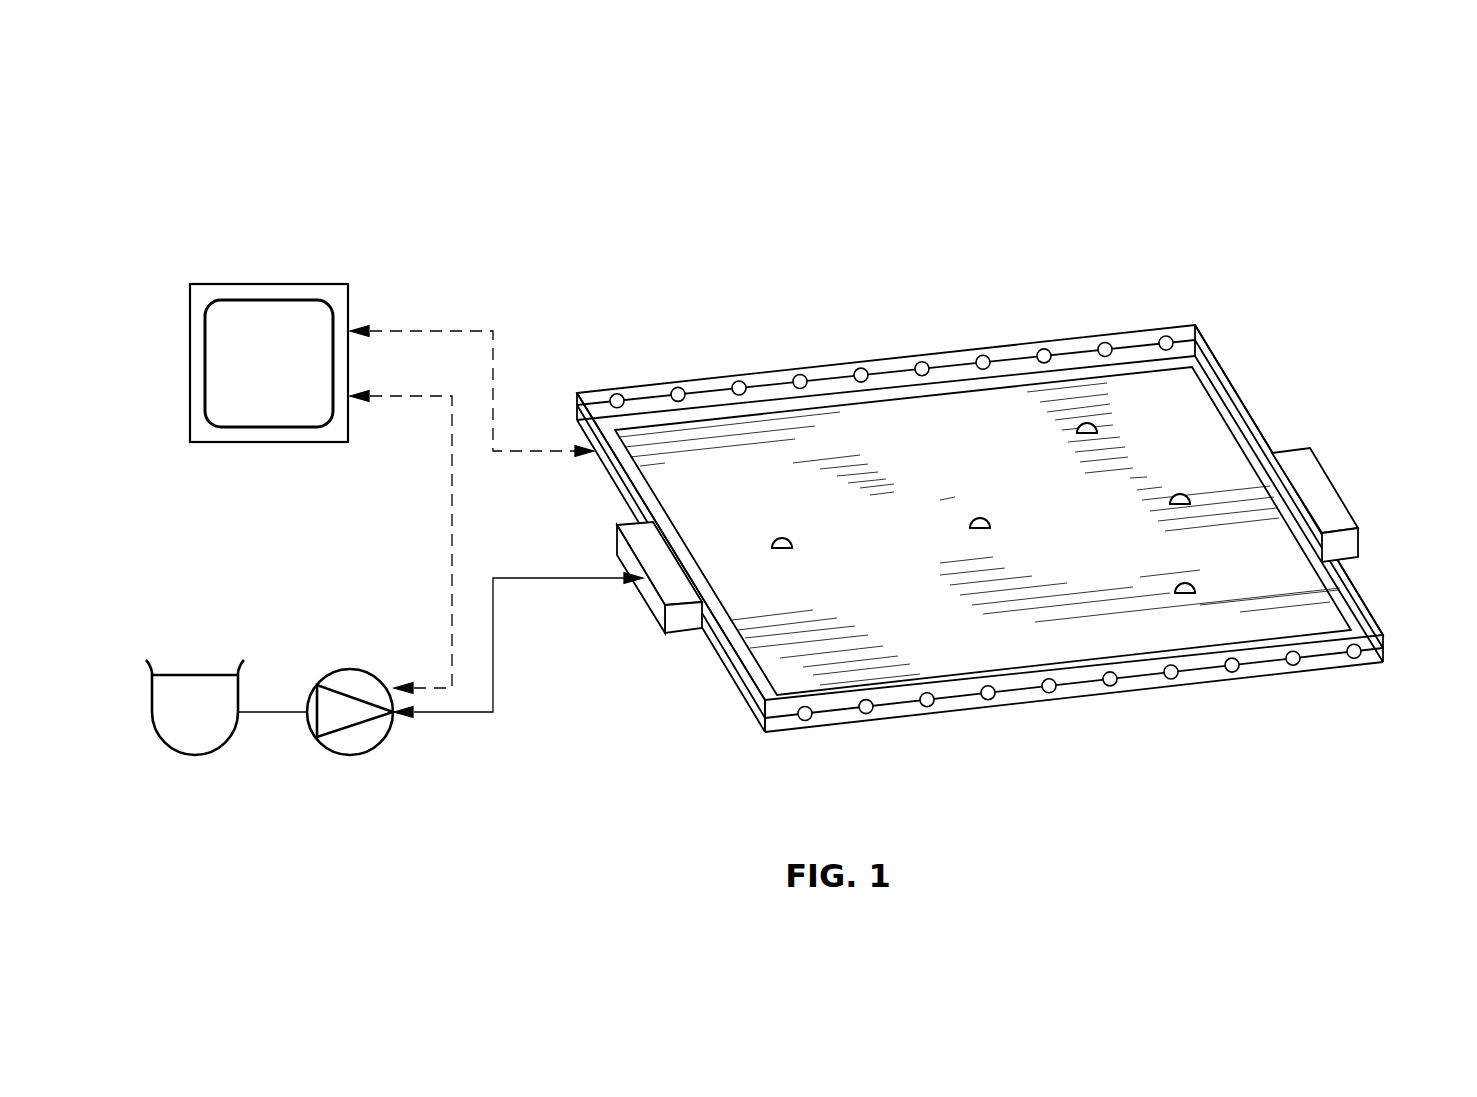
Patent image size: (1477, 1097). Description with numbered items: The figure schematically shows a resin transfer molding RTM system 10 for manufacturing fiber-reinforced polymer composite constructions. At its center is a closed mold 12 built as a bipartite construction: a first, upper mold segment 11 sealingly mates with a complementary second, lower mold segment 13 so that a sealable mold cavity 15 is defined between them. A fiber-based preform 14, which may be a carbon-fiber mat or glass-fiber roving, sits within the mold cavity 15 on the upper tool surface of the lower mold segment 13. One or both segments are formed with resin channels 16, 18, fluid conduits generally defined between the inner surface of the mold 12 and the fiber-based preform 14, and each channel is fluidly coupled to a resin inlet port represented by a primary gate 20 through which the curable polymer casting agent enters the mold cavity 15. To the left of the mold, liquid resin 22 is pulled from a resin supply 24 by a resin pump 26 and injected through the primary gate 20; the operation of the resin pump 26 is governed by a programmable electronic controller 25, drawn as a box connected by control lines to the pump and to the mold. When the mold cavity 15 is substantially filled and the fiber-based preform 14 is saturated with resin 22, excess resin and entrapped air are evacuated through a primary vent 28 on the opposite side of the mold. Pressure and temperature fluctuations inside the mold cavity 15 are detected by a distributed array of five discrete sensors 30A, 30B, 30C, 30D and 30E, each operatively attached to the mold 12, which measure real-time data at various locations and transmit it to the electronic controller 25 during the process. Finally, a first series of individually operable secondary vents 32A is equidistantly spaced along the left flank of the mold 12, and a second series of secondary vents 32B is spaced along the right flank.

The RTM system 10 is at (1300, 150).
The first (upper) mold segment 11 is at (1385, 663).
The closed mold 12 is at (1265, 400).
The second (lower) mold segment 13 is at (1386, 647).
The fiber-based preform 14 is at (1188, 393).
The mold cavity 15 is at (860, 350).
The resin channel 16 is at (1090, 350).
The resin channel 18 is at (1313, 642).
The primary gate 20 is at (688, 621).
The liquid resin 22 is at (195, 690).
The resin supply 24 is at (152, 703).
The electronic controller 25 is at (219, 284).
The resin pump 26 is at (318, 668).
The primary vent 28 is at (1322, 492).
The sensor 30A is at (776, 542).
The sensor 30B is at (973, 525).
The sensor 30C is at (1081, 427).
The sensor 30D is at (1174, 499).
The sensor 30E is at (1191, 587).
The first series of secondary vents 32A is at (622, 375).
The second series of secondary vents 32B is at (795, 745).